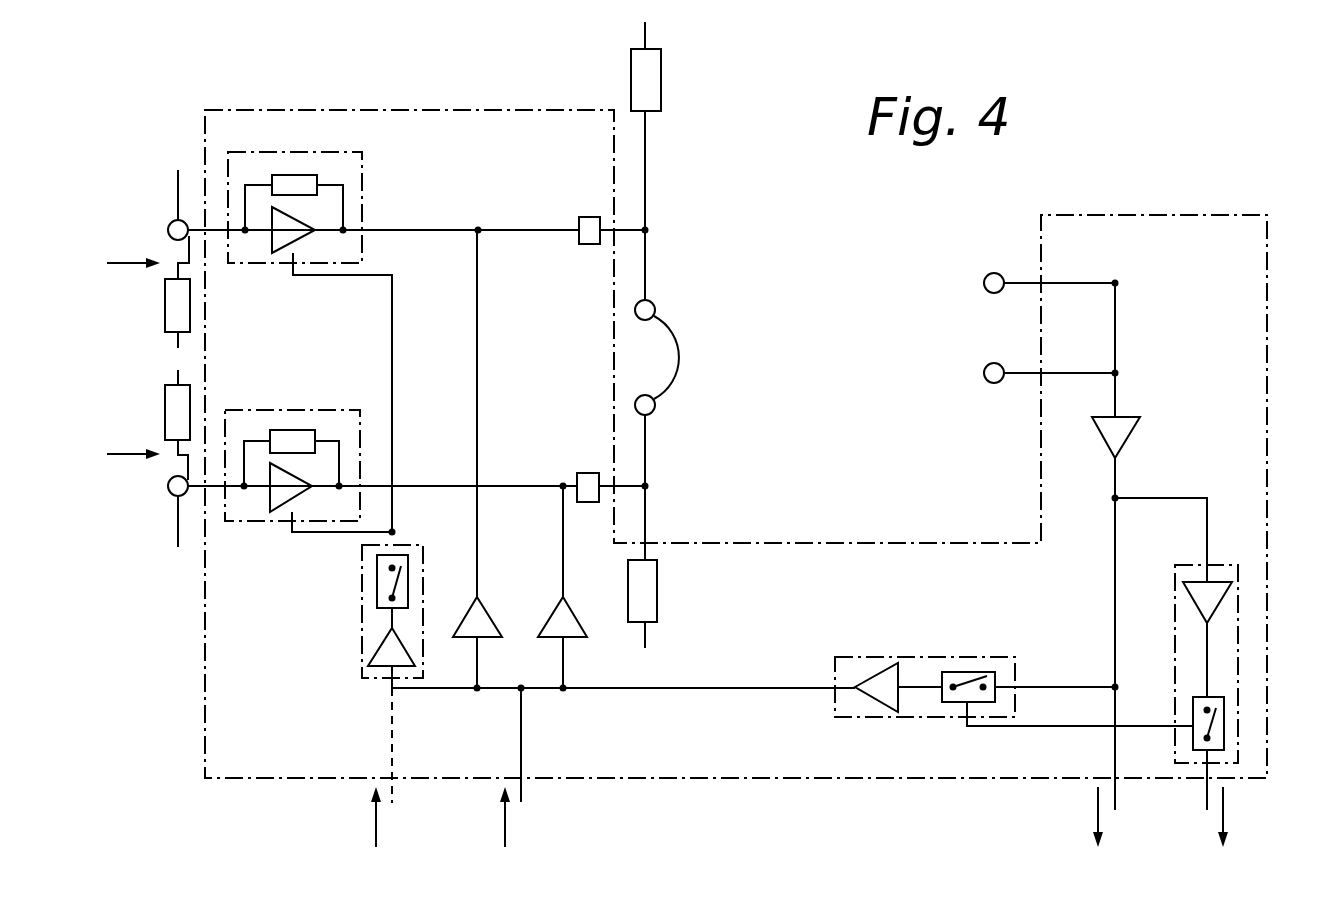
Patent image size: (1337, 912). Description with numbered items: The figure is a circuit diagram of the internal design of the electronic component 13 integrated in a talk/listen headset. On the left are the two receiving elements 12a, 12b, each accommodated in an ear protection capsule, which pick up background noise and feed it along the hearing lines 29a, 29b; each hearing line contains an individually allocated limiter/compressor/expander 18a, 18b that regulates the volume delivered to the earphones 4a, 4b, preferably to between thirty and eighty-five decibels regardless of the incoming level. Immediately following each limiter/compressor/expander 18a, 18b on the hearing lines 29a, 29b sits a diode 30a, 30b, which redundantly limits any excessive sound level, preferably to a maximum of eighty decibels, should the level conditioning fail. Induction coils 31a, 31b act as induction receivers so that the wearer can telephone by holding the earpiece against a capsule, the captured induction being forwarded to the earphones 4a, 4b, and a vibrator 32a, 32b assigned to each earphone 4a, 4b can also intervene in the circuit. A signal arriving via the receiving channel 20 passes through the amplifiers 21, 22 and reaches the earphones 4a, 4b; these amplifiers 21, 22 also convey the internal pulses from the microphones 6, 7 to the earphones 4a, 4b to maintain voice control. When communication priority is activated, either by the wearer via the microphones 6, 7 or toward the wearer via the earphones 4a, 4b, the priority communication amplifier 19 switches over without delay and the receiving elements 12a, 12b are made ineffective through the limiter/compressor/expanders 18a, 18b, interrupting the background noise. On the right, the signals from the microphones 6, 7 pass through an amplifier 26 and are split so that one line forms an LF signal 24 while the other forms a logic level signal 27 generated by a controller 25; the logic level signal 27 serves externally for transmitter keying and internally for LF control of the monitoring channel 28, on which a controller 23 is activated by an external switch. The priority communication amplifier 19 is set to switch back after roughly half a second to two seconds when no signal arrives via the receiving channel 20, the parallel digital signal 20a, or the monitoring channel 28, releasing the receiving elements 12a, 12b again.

The earphone 4a is at (655, 408).
The earphone 4b is at (655, 305).
The microphone 6 is at (993, 274).
The microphone 7 is at (992, 384).
The receiving element 12a is at (168, 486).
The receiving element 12b is at (168, 230).
The electronic component 13 is at (615, 162).
The limiter/compressor/expander 18a is at (250, 410).
The limiter/compressor/expander 18b is at (254, 152).
The priority communication amplifier 19 is at (362, 652).
The receiving channel 20 is at (522, 765).
The digital signal 20a is at (392, 733).
The amplifier 21 is at (490, 612).
The amplifier 22 is at (568, 615).
The controller 23 is at (898, 717).
The LF signal 24 is at (1097, 807).
The controller 25 is at (1240, 742).
The amplifier 26 is at (1130, 437).
The logic level signal 27 is at (1225, 808).
The monitoring channel 28 is at (913, 690).
The hearing line 29a is at (510, 486).
The hearing line 29b is at (531, 230).
The diode 30a is at (602, 490).
The diode 30b is at (602, 222).
The induction coil 31a is at (165, 412).
The induction coil 31b is at (165, 305).
The vibrator 32a is at (660, 588).
The vibrator 32b is at (661, 80).